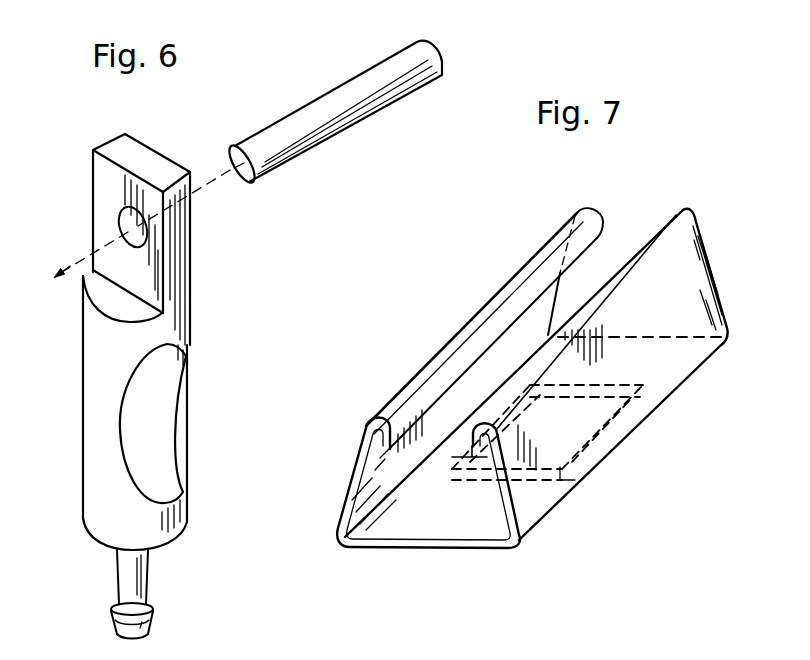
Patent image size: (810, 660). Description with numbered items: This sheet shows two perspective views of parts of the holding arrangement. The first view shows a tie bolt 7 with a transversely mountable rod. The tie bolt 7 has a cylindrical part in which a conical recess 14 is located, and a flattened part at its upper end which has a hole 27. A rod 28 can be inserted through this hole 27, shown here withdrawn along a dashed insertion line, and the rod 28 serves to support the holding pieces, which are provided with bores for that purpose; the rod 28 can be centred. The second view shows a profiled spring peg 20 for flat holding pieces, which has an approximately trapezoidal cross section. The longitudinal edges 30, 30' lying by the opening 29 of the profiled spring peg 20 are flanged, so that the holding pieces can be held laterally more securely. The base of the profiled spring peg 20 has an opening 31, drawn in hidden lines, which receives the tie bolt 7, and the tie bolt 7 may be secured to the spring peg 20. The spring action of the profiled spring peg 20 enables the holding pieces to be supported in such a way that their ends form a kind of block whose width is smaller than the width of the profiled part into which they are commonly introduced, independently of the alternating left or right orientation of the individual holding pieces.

In FIG. 6, the tie bolt 7 is at (68, 438).
In FIG. 6, the conical recess 14 is at (190, 406).
In FIG. 6, the hole 27 is at (121, 215).
In FIG. 6, the rod 28 is at (286, 153).
In FIG. 7, the profiled spring peg 20 is at (332, 513).
In FIG. 7, the opening 29 is at (602, 265).
In FIG. 7, the longitudinal edge 30 is at (484, 316).
In FIG. 7, the longitudinal edge 30' is at (634, 363).
In FIG. 7, the opening 31 is at (602, 437).